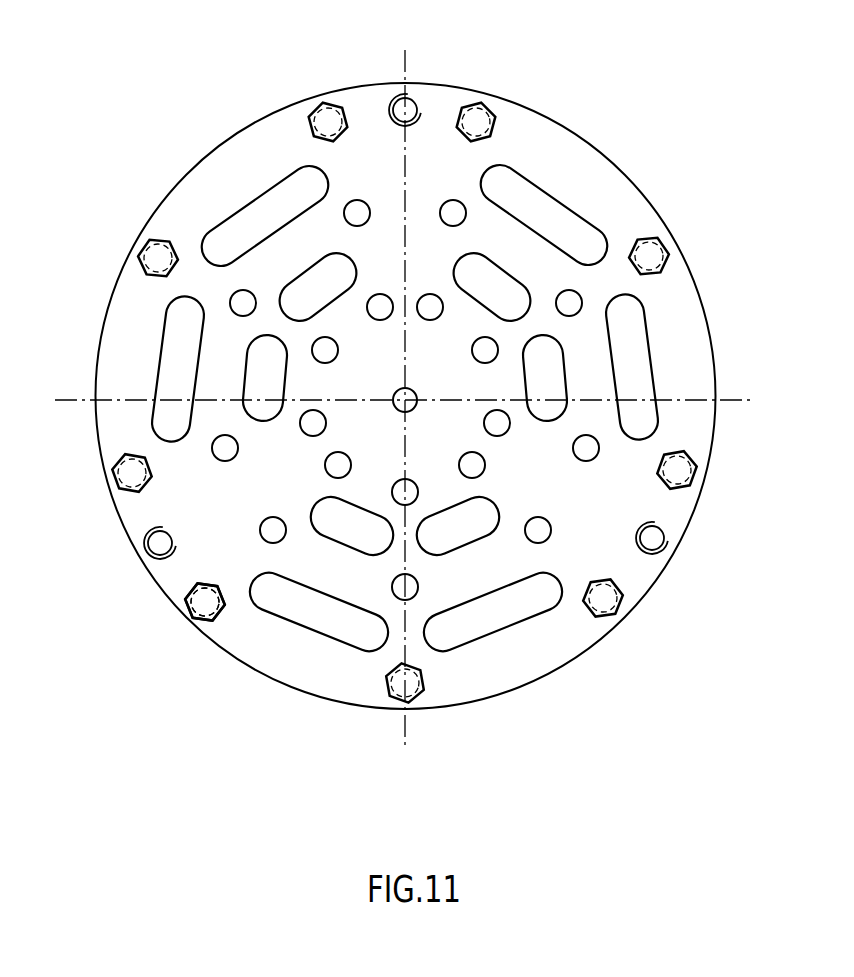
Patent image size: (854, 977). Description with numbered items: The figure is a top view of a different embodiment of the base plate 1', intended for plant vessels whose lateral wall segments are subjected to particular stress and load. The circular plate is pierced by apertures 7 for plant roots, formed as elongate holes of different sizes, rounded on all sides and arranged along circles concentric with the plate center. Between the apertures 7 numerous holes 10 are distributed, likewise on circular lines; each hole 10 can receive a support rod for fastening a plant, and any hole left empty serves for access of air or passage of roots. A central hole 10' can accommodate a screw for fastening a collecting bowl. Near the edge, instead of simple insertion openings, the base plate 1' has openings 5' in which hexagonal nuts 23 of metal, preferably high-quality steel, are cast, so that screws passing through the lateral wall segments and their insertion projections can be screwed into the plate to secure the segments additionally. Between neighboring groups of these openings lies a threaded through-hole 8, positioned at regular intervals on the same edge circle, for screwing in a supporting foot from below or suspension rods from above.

The base plate 1' is at (441, 396).
The openings 5' is at (416, 411).
The apertures 7 is at (357, 527).
The tapped hole 8 is at (408, 108).
The holes 10 is at (314, 400).
The central hole 10' is at (386, 374).
The hexagonal nut 23 is at (219, 612).